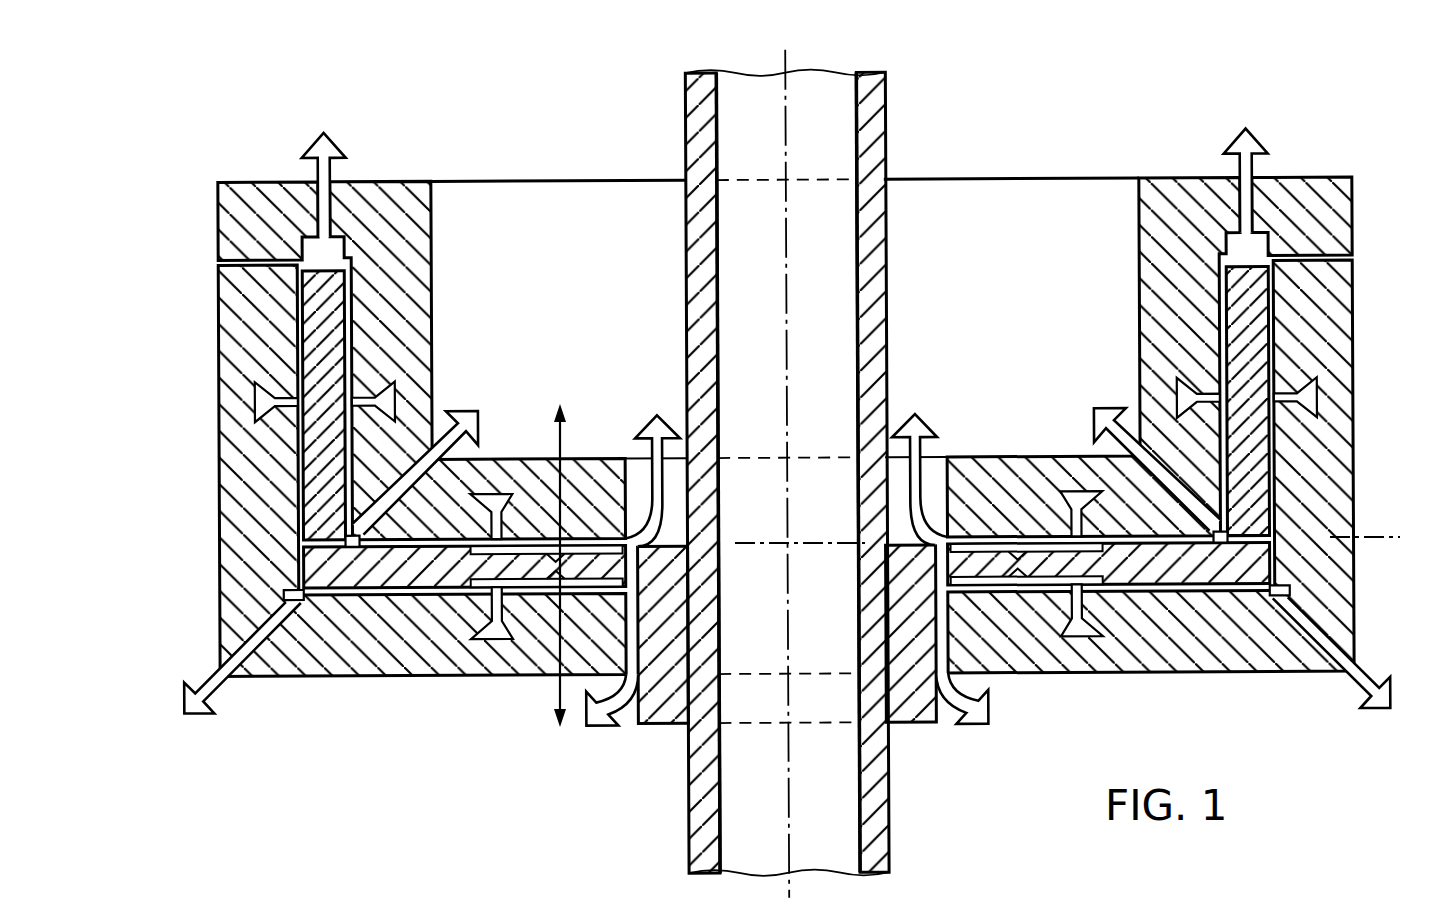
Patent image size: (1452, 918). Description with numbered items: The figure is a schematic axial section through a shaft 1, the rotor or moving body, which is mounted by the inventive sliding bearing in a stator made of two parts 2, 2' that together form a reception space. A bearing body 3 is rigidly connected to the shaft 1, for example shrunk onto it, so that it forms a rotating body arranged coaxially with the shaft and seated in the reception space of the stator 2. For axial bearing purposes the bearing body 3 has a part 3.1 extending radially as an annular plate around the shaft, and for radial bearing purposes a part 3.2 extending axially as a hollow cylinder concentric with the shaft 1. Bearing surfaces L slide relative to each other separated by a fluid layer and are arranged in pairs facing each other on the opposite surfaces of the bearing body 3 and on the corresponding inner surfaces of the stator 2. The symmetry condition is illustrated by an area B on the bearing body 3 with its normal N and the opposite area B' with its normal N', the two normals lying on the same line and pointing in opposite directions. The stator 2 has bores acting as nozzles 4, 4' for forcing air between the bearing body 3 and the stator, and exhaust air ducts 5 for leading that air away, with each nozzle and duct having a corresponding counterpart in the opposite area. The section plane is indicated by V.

The shaft 1 is at (896, 127).
The stator 2 is at (779, 426).
The stator part 2' is at (786, 359).
The bearing body 3 is at (657, 740).
The radially extending part 3.1 is at (362, 590).
The axially extending part 3.2 is at (320, 292).
The nozzle 4 is at (786, 452).
The nozzle 4' is at (788, 554).
The exhaust air duct 5 is at (350, 540).
The area B is at (777, 483).
The opposite area B' is at (761, 650).
The normal N is at (583, 469).
The normal N' is at (544, 663).
The bearing surface L is at (1217, 301).
The section plane V is at (788, 552).